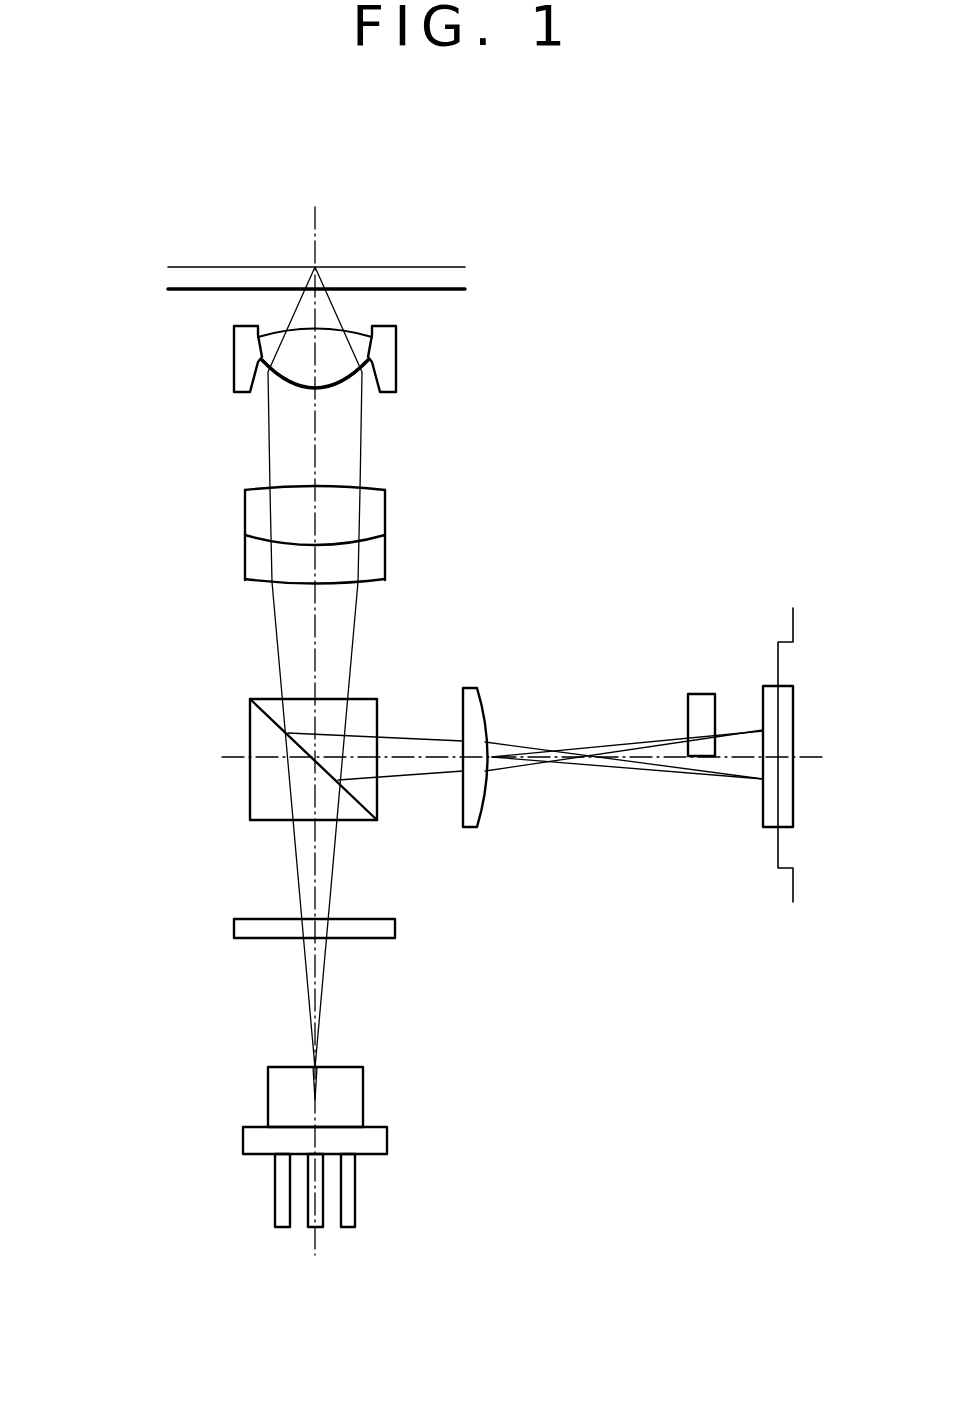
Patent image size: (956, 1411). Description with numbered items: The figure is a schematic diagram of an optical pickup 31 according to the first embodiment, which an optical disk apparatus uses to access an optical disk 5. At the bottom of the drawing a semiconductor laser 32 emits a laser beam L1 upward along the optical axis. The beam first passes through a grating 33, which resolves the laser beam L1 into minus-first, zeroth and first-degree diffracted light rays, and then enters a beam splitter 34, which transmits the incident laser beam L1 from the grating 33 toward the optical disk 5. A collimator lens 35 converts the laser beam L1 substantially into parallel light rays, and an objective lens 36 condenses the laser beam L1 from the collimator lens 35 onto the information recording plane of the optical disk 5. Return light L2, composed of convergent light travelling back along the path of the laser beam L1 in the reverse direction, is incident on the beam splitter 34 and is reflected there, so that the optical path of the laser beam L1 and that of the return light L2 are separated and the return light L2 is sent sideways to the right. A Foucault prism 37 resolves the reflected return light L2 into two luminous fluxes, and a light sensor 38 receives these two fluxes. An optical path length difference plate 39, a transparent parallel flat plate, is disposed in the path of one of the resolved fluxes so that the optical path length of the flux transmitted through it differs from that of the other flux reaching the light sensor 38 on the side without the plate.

The optical pickup 31 is at (225, 221).
The optical disk 5 is at (440, 273).
The objective lens 36 is at (238, 370).
The collimator lens 35 is at (245, 517).
The beam splitter 34 is at (250, 729).
The grating 33 is at (234, 929).
The semiconductor laser 32 is at (268, 1086).
The Foucault prism 37 is at (470, 818).
The light sensor 38 is at (777, 808).
The optical path length difference plate 39 is at (687, 718).
The laser beam L1 is at (362, 446).
The return light L2 is at (425, 737).